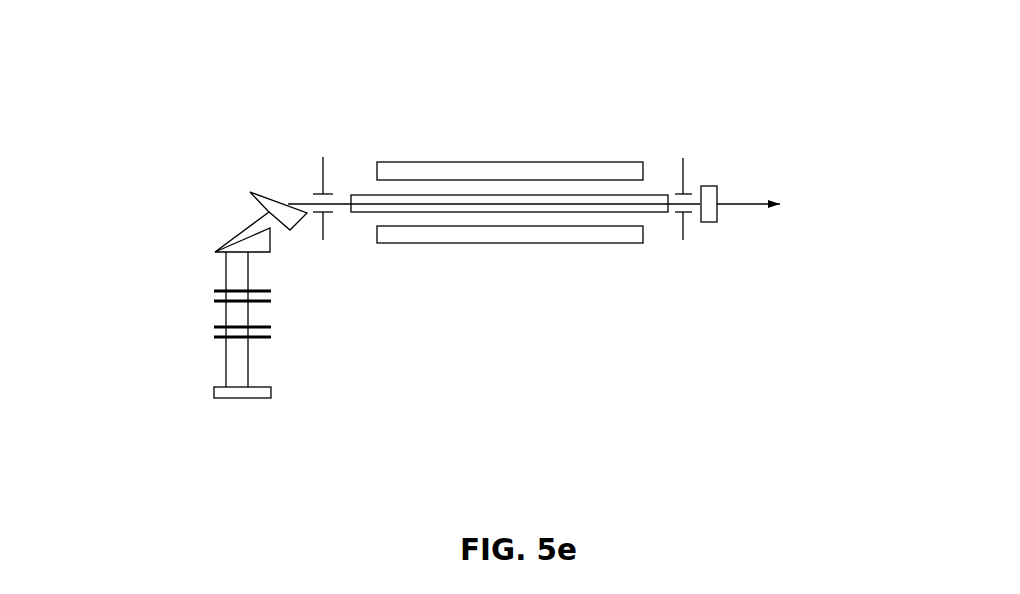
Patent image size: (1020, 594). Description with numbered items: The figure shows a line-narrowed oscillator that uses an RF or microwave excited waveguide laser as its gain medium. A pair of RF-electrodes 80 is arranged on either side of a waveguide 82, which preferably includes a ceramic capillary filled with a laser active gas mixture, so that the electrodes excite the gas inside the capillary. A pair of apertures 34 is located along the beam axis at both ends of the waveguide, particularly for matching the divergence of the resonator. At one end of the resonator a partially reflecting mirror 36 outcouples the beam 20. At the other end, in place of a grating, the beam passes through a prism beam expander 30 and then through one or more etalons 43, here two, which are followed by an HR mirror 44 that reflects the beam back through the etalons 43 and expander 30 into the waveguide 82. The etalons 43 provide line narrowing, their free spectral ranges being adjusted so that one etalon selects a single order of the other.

The beam 20 is at (781, 195).
The prism beam expander 30 is at (233, 187).
The apertures 34 is at (673, 154).
The partially reflecting mirror 36 is at (710, 172).
The etalons 43 is at (188, 285).
The HR mirror 44 is at (247, 399).
The RF-electrodes 80 is at (617, 162).
The waveguide 82 is at (655, 213).